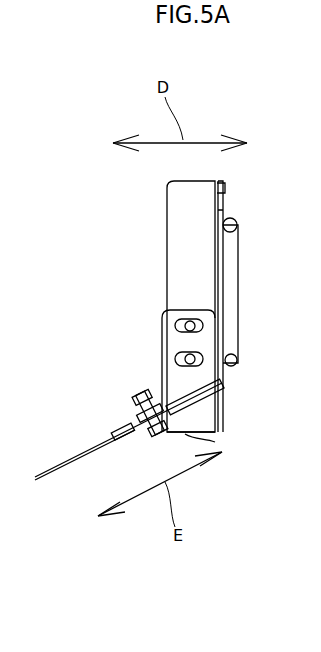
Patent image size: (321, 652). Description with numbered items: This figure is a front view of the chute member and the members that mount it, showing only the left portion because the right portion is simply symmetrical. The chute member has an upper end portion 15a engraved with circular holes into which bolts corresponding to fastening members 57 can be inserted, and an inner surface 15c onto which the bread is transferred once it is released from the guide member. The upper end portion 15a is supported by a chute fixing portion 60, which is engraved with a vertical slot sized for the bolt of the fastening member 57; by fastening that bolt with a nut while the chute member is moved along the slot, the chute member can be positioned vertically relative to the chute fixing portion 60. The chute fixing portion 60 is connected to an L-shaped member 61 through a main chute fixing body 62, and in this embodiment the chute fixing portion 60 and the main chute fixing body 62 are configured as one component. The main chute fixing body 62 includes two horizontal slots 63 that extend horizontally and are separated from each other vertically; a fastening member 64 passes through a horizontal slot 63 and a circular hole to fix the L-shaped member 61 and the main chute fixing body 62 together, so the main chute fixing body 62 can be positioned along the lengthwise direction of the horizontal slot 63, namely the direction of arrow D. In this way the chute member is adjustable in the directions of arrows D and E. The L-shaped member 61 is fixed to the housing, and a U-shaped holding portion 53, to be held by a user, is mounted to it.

The L-shaped member 61 is at (178, 190).
The chute fixing portion 60 is at (226, 383).
The U-shaped holding portion 53 is at (233, 256).
The horizontal slots 63 is at (178, 362).
The fastening member 64 is at (206, 358).
The main chute fixing body 62 is at (202, 413).
The fastening member 57 is at (190, 436).
The inner surface 15c is at (78, 458).
The upper end portion 15a is at (140, 400).